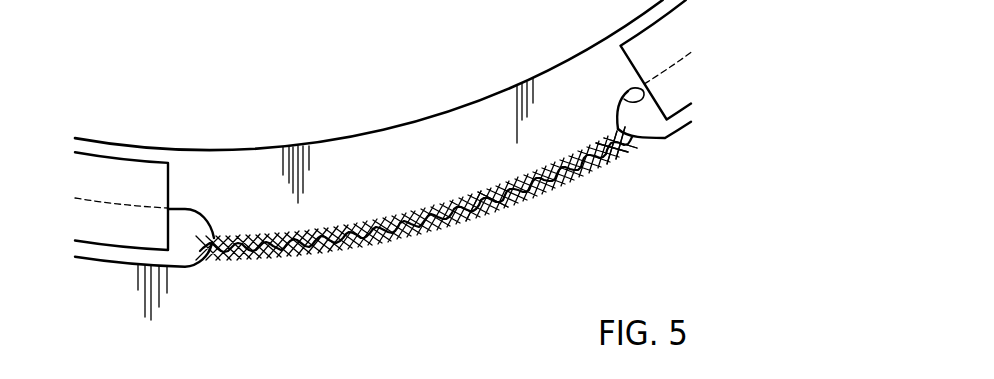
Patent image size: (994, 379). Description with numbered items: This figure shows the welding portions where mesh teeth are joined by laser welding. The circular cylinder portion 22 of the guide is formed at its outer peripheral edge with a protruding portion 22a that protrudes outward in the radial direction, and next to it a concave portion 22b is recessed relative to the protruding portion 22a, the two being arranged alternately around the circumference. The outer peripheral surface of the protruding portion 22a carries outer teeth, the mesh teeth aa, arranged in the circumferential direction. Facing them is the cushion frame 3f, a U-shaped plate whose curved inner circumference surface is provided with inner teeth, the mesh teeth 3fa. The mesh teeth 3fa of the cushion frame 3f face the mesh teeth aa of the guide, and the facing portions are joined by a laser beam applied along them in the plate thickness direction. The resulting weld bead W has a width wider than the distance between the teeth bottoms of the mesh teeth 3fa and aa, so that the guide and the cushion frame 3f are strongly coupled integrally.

The circular cylinder portion 22 is at (384, 160).
The protruding portion 22a is at (407, 155).
The concave portion 22b is at (131, 207).
The mesh teeth aa is at (480, 203).
The cushion frame 3f is at (520, 224).
The mesh teeth 3fa is at (468, 218).
The weld bead W is at (602, 161).